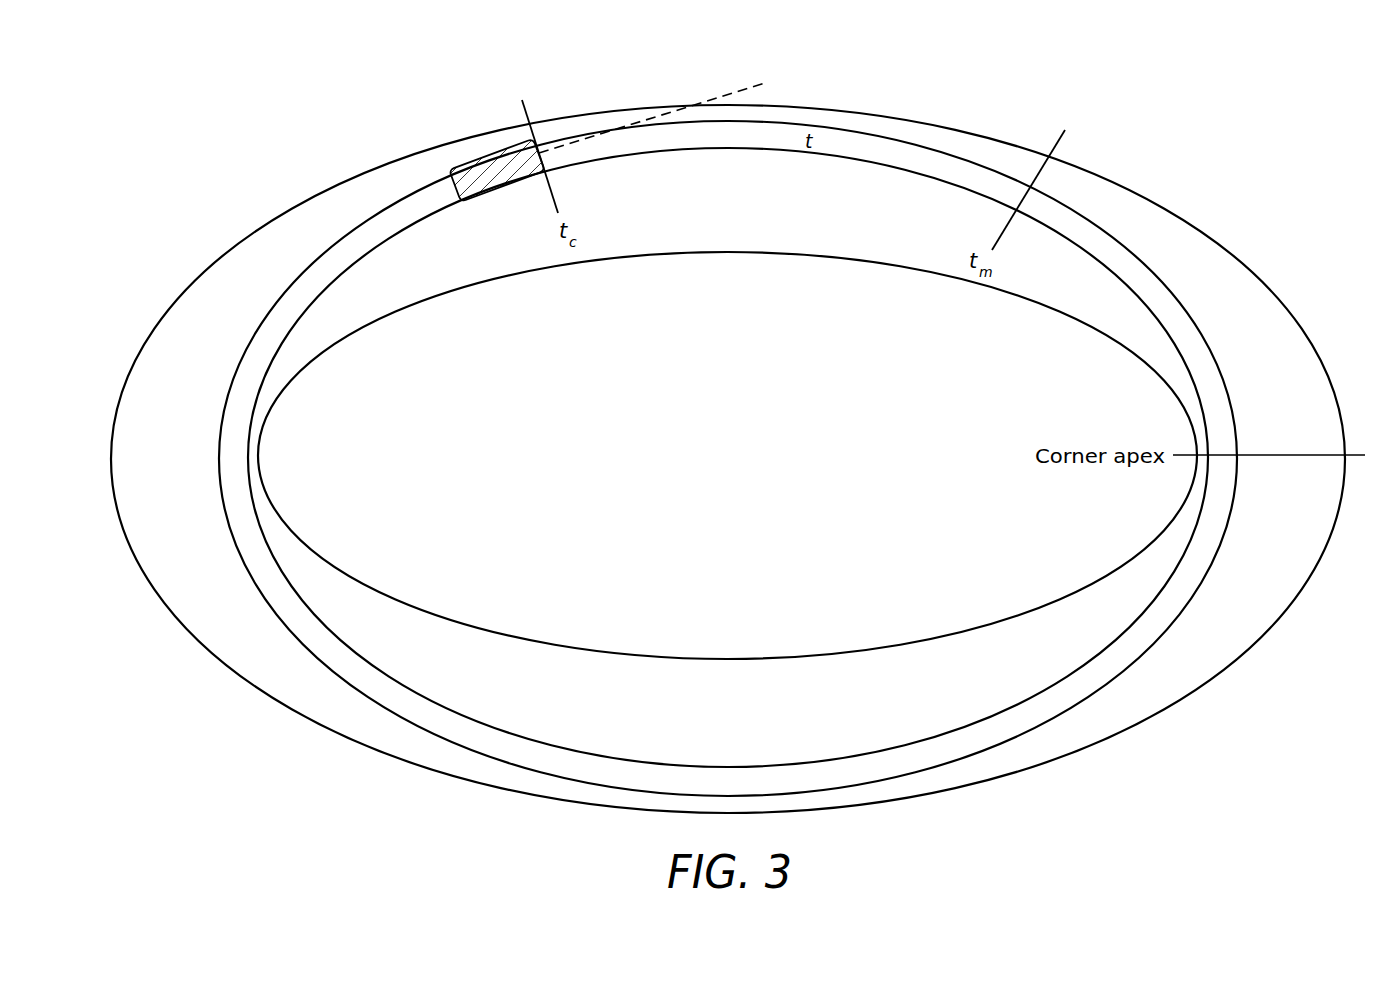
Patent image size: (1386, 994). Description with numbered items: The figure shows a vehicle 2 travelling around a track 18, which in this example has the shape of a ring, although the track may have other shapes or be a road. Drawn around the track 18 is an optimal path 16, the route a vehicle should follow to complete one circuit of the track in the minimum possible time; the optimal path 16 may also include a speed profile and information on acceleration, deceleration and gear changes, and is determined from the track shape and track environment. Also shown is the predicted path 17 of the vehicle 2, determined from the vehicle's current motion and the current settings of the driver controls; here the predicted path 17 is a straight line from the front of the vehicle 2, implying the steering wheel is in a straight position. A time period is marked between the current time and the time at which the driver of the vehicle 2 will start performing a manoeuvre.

The vehicle 2 is at (484, 192).
The optimal path 16 is at (704, 142).
The predicted path 17 is at (664, 117).
The track 18 is at (166, 571).